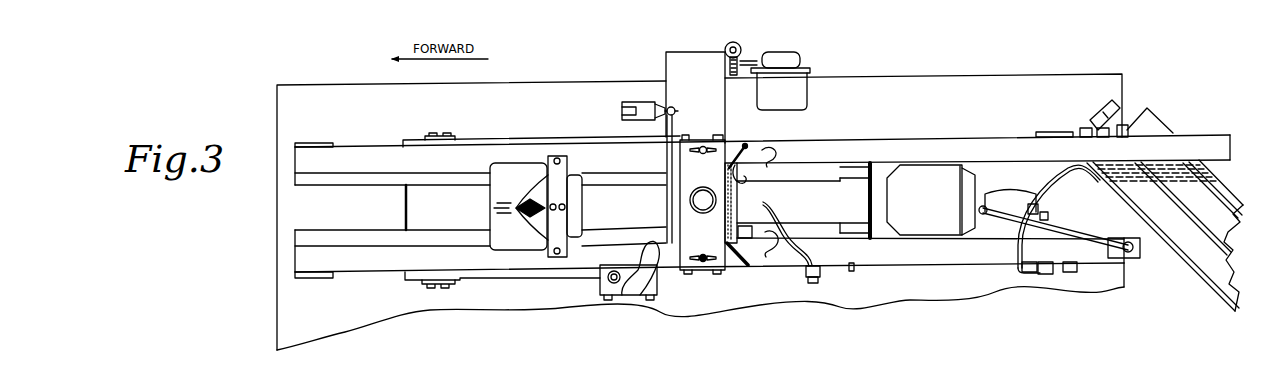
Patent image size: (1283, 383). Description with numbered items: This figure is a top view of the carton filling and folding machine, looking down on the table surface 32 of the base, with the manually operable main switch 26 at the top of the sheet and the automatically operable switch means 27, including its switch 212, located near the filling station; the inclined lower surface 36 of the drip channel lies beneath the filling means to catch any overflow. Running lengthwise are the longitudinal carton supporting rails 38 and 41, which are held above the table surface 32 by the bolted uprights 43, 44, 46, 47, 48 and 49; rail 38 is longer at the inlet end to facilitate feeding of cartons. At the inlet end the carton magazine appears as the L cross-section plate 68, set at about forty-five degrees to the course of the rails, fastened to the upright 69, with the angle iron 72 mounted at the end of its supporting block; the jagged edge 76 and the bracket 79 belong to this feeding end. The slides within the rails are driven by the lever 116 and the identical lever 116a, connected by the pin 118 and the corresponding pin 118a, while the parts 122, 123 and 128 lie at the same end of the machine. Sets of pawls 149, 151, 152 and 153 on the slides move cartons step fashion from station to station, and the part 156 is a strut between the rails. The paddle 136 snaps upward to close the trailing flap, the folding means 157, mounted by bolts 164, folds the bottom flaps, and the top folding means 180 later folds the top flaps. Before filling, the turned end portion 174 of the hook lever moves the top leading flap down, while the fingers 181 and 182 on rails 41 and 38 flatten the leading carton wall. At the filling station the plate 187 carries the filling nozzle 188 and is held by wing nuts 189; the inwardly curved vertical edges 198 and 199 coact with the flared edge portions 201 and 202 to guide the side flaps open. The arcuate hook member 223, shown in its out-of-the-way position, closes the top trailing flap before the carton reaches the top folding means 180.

The manually operable main switch 26 is at (806, 65).
The automatically operable switch means 27 is at (638, 96).
The top or table surface 32 is at (972, 91).
The lower surface 36 is at (698, 62).
The rail 38 is at (871, 256).
The rail 41 is at (838, 153).
The upright 43 is at (1060, 132).
The upright 44 is at (1062, 272).
The upright 46 is at (313, 144).
The upright 47 is at (312, 279).
The upright 48 is at (703, 139).
The upright 49 is at (703, 262).
The L cross-section plate 68 is at (1238, 293).
The upright 69 is at (1097, 180).
The angle iron 72 is at (1262, 197).
The ramp edge 76 is at (1230, 241).
The bracket 79 is at (1125, 118).
The lever 116 is at (456, 139).
The lever 116a is at (456, 281).
The pin 118 is at (438, 136).
The bolt plate 118a is at (440, 285).
The blocks 122 is at (1092, 147).
The rod 123 is at (1067, 230).
The tube 128 is at (1052, 187).
The paddle or arm 136 is at (1000, 200).
The pawl 149 is at (1017, 163).
The pawl 151 is at (893, 166).
The pawl 152 is at (770, 169).
The pawl 153 is at (631, 172).
The strut 156 is at (405, 172).
The folding means 157 is at (924, 200).
The bolts 164 is at (965, 196).
The turned end portion 174 is at (769, 203).
The top folding means 180 is at (536, 206).
The finger 181 is at (762, 150).
The finger 182 is at (770, 258).
The plate 187 is at (714, 203).
The filling nozzle 188 is at (703, 200).
The wing nuts 189 is at (712, 262).
The vertical edge 198 is at (749, 182).
The vertical edge 199 is at (752, 225).
The flared vertical edge portion 201 is at (739, 147).
The flared vertical edge portion 202 is at (737, 259).
The switch 212 is at (622, 117).
The arcuate hook member 223 is at (632, 291).